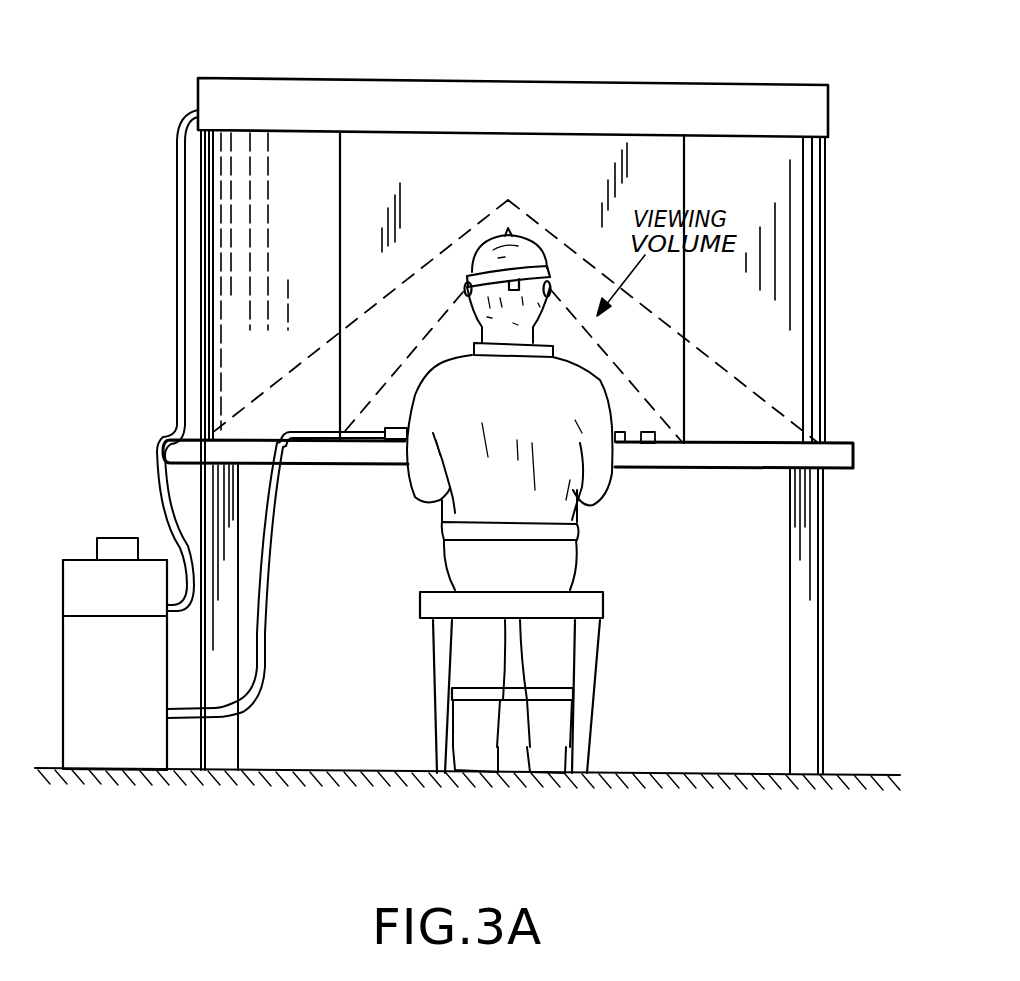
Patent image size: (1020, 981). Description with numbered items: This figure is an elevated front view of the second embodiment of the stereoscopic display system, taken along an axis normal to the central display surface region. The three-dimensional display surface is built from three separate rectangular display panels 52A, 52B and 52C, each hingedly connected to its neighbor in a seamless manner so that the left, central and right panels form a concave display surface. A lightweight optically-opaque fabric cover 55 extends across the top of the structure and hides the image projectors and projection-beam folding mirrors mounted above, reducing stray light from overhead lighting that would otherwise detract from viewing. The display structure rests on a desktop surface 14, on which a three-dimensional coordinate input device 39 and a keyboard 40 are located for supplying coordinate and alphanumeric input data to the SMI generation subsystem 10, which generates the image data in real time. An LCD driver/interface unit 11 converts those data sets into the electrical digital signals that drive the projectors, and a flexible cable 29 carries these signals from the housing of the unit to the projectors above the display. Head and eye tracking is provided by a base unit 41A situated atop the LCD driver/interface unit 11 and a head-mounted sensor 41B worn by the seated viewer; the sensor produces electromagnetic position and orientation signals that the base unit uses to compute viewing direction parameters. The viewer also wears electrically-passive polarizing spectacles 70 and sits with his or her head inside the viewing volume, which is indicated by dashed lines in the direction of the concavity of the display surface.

The SMI generation subsystem 10 is at (77, 688).
The LCD driver/interface unit 11 is at (85, 597).
The desktop surface 14 is at (855, 452).
The flexible cable 29 is at (177, 174).
The 3-D coordinate input device 39 is at (652, 444).
The keyboard 40 is at (395, 440).
The base unit 41A is at (115, 540).
The head-mounted sensor 41B is at (547, 277).
The left display panel 52A is at (222, 238).
The central display panel 52B is at (508, 162).
The right display panel 52C is at (797, 263).
The optically-opaque fabric cover 55 is at (717, 102).
The polarizing spectacles 70 is at (467, 283).